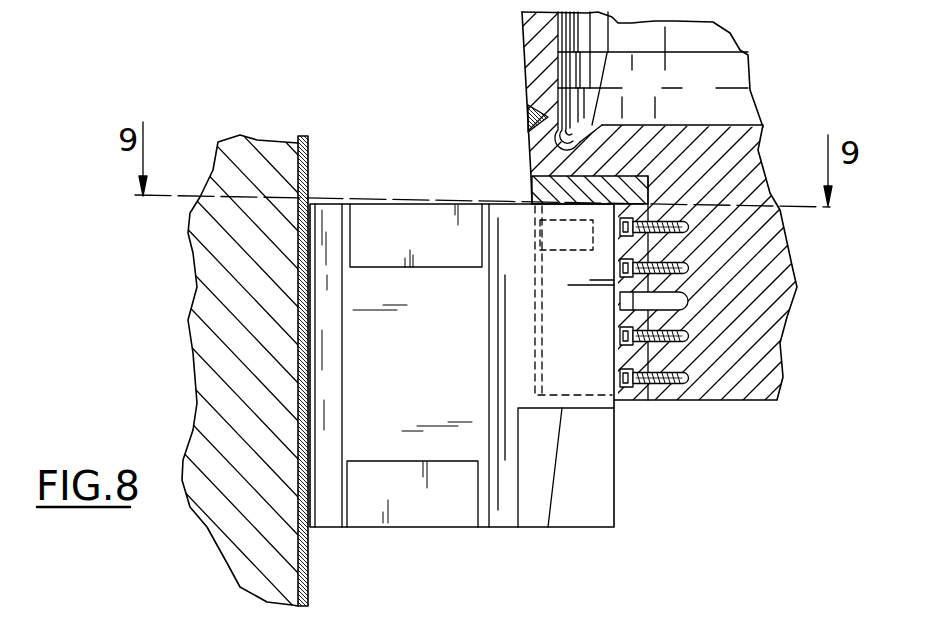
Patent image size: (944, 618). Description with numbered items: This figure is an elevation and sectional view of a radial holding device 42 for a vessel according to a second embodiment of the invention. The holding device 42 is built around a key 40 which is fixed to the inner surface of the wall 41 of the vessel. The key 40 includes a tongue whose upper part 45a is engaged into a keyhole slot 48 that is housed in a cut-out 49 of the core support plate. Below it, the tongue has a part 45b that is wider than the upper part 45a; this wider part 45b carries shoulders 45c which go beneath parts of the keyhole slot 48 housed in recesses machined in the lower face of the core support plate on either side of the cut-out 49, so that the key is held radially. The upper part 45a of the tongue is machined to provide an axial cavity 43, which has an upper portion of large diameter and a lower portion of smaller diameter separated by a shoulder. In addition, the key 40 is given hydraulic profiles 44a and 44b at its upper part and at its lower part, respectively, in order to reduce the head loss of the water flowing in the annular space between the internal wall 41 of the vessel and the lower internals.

The key 40 is at (328, 215).
The wall 41 is at (203, 310).
The holding device 42 is at (622, 526).
The axial cavity 43 is at (555, 235).
The hydraulic profile 44a is at (417, 215).
The hydraulic profile 44b is at (408, 513).
The upper part of the tongue 45a is at (587, 380).
The part of the tongue 45b is at (593, 475).
The shoulders 45c is at (548, 527).
The keyhole slot 48 is at (625, 158).
The cut-out 49 is at (670, 135).